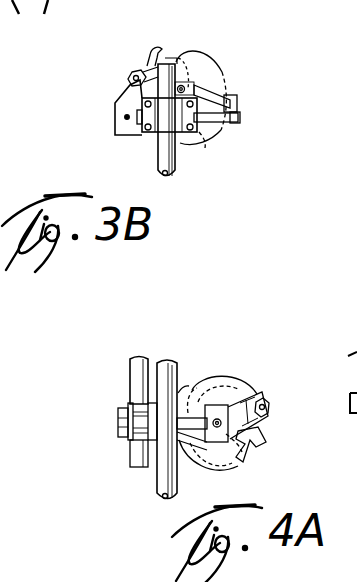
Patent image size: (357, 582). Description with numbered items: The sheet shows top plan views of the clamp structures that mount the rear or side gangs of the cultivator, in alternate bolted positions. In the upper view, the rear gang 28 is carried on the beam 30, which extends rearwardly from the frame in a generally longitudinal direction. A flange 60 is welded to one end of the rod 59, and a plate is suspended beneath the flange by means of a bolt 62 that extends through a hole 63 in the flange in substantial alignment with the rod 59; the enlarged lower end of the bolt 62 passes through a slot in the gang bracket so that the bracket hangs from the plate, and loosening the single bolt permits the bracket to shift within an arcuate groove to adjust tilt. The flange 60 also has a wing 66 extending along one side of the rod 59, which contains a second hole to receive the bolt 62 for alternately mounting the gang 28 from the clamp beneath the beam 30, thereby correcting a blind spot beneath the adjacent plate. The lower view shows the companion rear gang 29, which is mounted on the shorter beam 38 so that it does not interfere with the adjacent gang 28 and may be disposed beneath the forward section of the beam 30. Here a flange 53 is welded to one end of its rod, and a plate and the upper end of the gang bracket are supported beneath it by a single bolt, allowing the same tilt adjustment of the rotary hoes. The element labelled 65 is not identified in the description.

In FIG. 3B, the rear gang 28 is at (151, 49).
In FIG. 3B, the wing 66 is at (171, 60).
In FIG. 3B, the bolt 62 is at (186, 91).
In FIG. 3B, the arm 65 is at (236, 102).
In FIG. 3B, the rod 59 is at (231, 122).
In FIG. 3B, the beam 30 is at (176, 163).
In FIG. 4A, the beam 30 is at (176, 362).
In FIG. 3B, the hole 63 is at (125, 117).
In FIG. 3B, the flange 60 is at (115, 130).
In FIG. 4A, the rear gang 29 is at (252, 380).
In FIG. 4A, the flange 53 is at (212, 405).
In FIG. 4A, the beam 38 is at (140, 458).